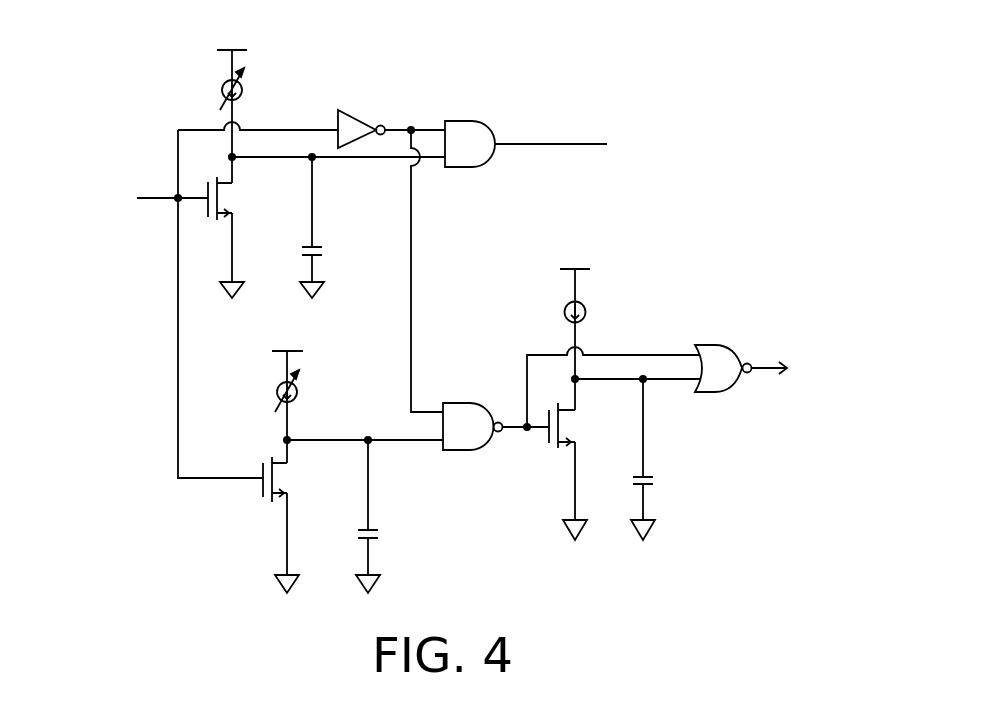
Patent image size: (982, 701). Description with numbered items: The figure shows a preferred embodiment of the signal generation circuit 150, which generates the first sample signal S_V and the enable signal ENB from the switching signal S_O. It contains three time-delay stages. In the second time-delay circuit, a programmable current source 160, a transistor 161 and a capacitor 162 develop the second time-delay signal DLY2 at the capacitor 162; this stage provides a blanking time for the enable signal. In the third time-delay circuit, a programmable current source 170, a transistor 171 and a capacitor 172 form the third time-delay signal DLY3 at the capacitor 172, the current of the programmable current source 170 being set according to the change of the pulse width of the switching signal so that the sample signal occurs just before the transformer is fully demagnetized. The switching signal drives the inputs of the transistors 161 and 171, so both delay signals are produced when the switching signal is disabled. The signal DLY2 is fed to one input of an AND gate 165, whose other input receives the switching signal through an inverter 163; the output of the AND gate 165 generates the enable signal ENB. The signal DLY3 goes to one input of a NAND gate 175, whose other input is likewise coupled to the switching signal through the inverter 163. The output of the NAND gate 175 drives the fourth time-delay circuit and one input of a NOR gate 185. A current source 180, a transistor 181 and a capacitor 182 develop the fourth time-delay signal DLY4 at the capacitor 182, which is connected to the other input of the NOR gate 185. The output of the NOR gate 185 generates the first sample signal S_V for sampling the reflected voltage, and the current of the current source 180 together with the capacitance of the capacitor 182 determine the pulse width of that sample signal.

The signal generation circuit 150 is at (728, 625).
The programmable current source 160 is at (222, 98).
The transistor 161 is at (227, 193).
The capacitor 162 is at (325, 245).
The inverter 163 is at (363, 110).
The AND gate 165 is at (465, 120).
The programmable current source 170 is at (275, 397).
The transistor 171 is at (275, 475).
The capacitor 172 is at (378, 528).
The NAND gate 175 is at (460, 402).
The current source 180 is at (562, 317).
The transistor 181 is at (563, 420).
The capacitor 182 is at (653, 473).
The NOR gate 185 is at (733, 388).